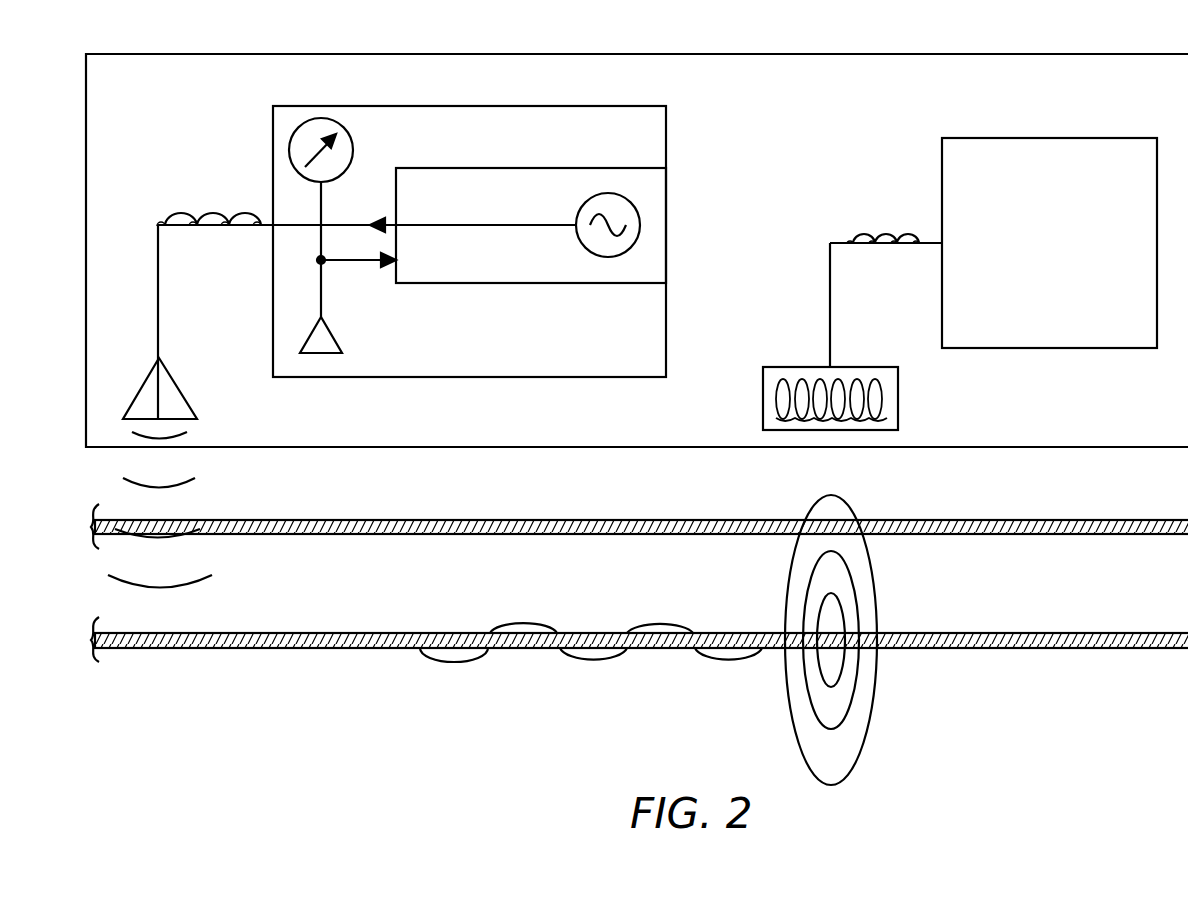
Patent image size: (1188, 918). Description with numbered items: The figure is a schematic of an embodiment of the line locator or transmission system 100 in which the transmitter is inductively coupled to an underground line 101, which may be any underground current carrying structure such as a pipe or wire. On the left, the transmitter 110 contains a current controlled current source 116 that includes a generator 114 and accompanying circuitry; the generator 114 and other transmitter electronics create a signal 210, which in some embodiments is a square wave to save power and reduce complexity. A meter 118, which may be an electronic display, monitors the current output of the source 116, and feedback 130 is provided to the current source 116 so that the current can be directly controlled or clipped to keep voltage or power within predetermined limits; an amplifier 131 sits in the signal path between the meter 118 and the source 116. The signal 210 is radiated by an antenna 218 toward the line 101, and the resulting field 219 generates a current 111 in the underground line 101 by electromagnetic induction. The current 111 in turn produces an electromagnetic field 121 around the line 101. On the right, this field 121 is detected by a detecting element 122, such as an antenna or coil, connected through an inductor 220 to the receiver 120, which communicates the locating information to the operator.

The line locator system 100 is at (786, 238).
The underground line 101 is at (225, 648).
The transmitter 110 is at (666, 143).
The current 111 is at (547, 622).
The generator 114 is at (578, 207).
The current controlled current source 116 is at (445, 168).
The meter 118 is at (322, 118).
The receiver 120 is at (1122, 138).
The electromagnetic field 121 is at (855, 513).
The detecting element 122 is at (898, 400).
The feedback 130 is at (353, 262).
The amplifier 131 is at (325, 355).
The signal 210 is at (197, 213).
The antenna 218 is at (180, 387).
The field 219 is at (195, 583).
The inductor 220 is at (872, 237).